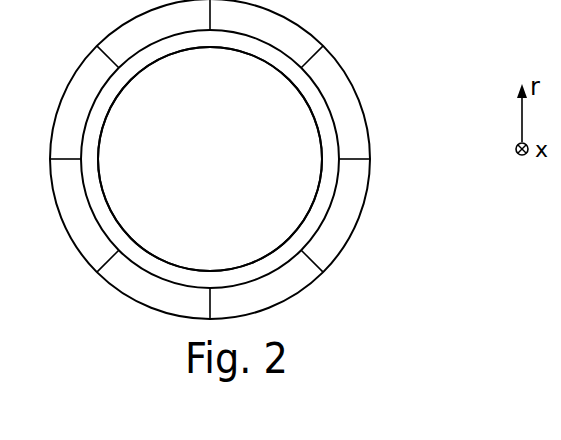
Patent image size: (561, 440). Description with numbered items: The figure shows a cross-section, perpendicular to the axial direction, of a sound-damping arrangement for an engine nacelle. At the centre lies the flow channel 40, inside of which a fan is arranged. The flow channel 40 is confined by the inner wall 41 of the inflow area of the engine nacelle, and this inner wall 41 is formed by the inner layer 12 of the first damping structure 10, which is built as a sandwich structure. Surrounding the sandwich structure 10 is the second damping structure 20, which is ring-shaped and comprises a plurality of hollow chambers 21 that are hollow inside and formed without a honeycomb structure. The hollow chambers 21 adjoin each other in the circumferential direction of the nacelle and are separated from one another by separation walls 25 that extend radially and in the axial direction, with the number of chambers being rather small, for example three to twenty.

The first damping structure 10 is at (100, 105).
The inner layer 12 is at (217, 48).
The second damping structure 20 is at (363, 110).
The hollow chamber 21 is at (352, 191).
The separation wall 25 is at (307, 265).
The flow channel 40 is at (223, 170).
The inner wall 41 is at (210, 159).